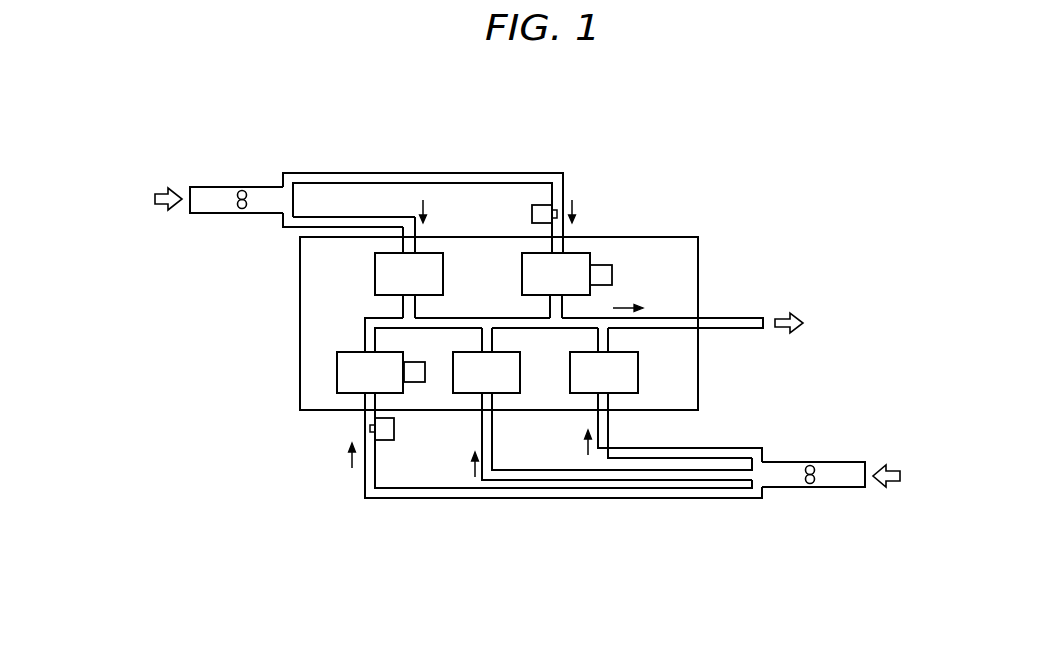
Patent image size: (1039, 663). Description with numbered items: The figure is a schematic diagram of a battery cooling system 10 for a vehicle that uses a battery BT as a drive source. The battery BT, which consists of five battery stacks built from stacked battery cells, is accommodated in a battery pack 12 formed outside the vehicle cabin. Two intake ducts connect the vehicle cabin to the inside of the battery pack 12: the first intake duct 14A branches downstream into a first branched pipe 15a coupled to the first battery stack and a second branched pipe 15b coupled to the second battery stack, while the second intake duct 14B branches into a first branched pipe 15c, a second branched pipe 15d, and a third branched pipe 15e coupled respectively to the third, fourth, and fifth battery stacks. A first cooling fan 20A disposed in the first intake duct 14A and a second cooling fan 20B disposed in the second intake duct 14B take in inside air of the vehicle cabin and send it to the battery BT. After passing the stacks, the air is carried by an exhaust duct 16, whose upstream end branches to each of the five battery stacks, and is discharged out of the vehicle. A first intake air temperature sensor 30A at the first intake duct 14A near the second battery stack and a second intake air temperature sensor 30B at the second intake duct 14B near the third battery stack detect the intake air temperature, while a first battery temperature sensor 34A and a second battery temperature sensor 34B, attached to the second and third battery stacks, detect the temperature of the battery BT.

The battery cooling system 10 is at (598, 132).
The battery pack 12 is at (660, 237).
The first intake duct 14A is at (205, 187).
The second intake duct 14B is at (833, 487).
The first cooling fan 20A is at (241, 187).
The second cooling fan 20B is at (810, 462).
The first branched pipe 15a is at (351, 217).
The second branched pipe 15b is at (350, 173).
The first branched pipe 15c is at (515, 498).
The second branched pipe 15d is at (520, 468).
The third branched pipe 15e is at (740, 448).
The exhaust duct 16 is at (672, 318).
The first intake air temperature sensor 30A is at (532, 211).
The second intake air temperature sensor 30B is at (394, 428).
The first battery temperature sensor 34A is at (600, 265).
The second battery temperature sensor 34B is at (410, 362).
The battery BT is at (370, 271).